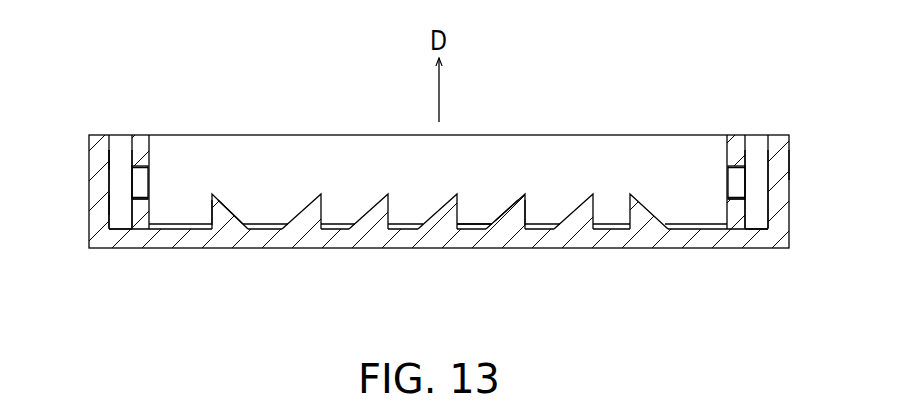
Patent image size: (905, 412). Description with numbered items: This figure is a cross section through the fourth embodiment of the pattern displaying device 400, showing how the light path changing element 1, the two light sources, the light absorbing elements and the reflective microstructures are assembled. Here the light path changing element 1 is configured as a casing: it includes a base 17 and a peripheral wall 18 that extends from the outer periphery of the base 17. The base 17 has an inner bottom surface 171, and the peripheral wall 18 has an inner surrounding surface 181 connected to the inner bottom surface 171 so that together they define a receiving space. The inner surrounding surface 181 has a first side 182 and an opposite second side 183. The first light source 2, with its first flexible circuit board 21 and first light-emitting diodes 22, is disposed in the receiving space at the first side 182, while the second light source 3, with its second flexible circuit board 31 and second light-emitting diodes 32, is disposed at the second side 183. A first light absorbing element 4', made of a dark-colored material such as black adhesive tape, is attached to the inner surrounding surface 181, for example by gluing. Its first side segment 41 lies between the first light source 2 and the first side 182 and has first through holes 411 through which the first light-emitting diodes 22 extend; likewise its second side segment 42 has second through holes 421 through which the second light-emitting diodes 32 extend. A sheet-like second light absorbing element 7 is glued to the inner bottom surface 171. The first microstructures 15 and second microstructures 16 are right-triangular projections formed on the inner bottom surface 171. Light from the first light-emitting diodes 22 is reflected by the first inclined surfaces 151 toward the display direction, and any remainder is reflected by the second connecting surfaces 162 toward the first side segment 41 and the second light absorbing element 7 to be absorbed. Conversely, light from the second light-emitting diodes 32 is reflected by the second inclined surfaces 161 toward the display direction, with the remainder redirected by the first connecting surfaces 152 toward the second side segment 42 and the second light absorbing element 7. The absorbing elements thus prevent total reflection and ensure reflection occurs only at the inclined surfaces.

The pattern displaying device 400 is at (81, 29).
The light path changing element 1 is at (402, 252).
The base 17 is at (546, 238).
The inner bottom surface 171 is at (473, 230).
The peripheral wall 18 is at (98, 187).
The inner surrounding surface 181 is at (108, 205).
The first side 182 is at (786, 166).
The second side 183 is at (109, 160).
The first light source 2 is at (757, 132).
The first flexible circuit board 21 is at (756, 188).
The first light-emitting diode 22 is at (735, 183).
The second light source 3 is at (115, 132).
The second flexible circuit board 31 is at (116, 222).
The second light-emitting diode 32 is at (140, 183).
The first light absorbing element 4' is at (438, 139).
The first side segment 41 is at (737, 137).
The first through hole 411 is at (735, 201).
The second side segment 42 is at (136, 138).
The second through hole 421 is at (142, 201).
The second light absorbing element 7 is at (191, 227).
The first microstructure 15 is at (212, 192).
The first inclined surface 151 is at (242, 225).
The first connecting surface 152 is at (212, 210).
The second microstructure 16 is at (527, 191).
The second inclined surface 161 is at (505, 208).
The second connecting surface 162 is at (528, 210).